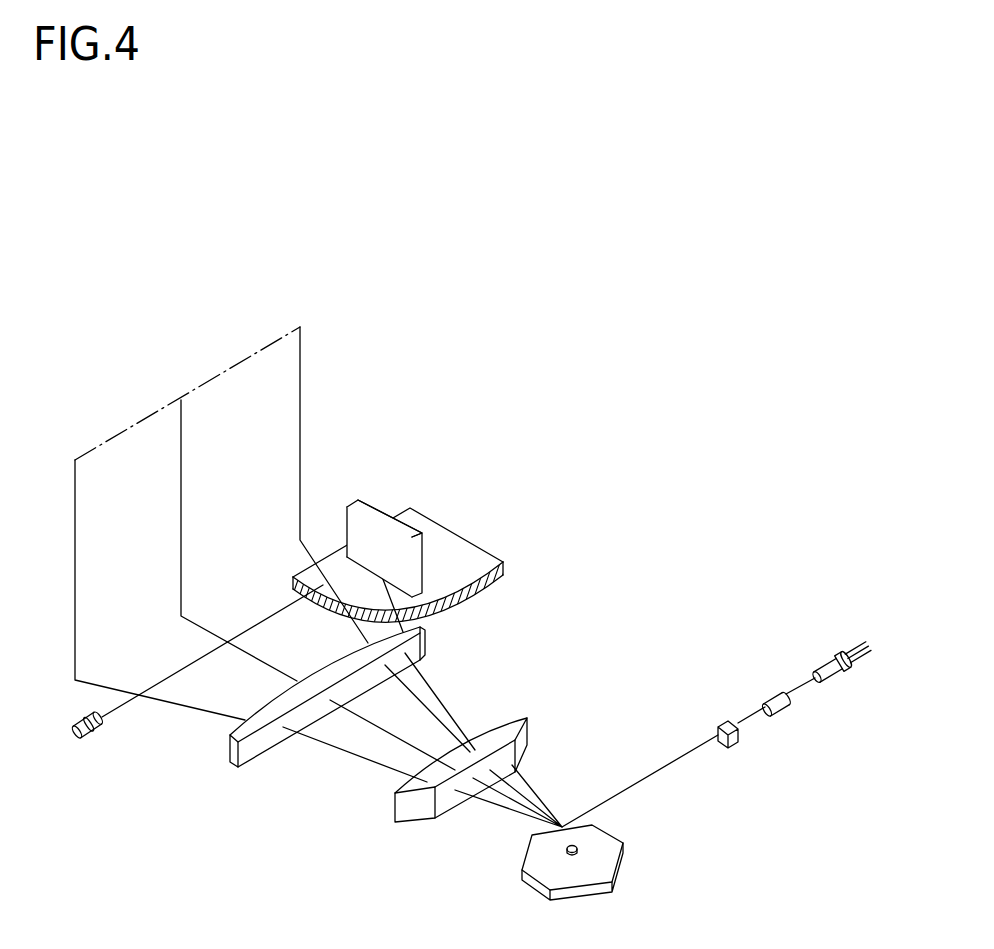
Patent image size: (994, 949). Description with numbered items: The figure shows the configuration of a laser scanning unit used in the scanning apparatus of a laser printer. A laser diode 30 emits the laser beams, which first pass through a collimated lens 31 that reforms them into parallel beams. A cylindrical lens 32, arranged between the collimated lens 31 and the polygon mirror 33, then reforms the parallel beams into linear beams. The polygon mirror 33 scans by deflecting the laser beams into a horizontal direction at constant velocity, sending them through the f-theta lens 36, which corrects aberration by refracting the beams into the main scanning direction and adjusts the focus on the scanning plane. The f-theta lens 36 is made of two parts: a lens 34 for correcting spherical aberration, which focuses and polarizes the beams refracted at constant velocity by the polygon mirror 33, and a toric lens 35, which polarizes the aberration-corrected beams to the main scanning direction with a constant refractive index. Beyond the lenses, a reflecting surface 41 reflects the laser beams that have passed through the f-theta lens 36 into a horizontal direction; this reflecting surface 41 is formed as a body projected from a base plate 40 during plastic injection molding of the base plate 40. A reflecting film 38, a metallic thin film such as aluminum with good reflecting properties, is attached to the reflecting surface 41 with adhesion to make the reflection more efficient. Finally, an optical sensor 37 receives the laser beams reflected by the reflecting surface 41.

The laser diode 30 is at (830, 682).
The collimated lens 31 is at (782, 712).
The cylindrical lens 32 is at (733, 747).
The polygon mirror 33 is at (610, 860).
The lens 34 is at (527, 718).
The toric lens 35 is at (428, 642).
The f-theta lens 36 is at (568, 648).
The optical sensor 37 is at (73, 723).
The reflecting film 38 is at (357, 523).
The base plate 40 is at (447, 533).
The reflecting surface 41 is at (383, 510).